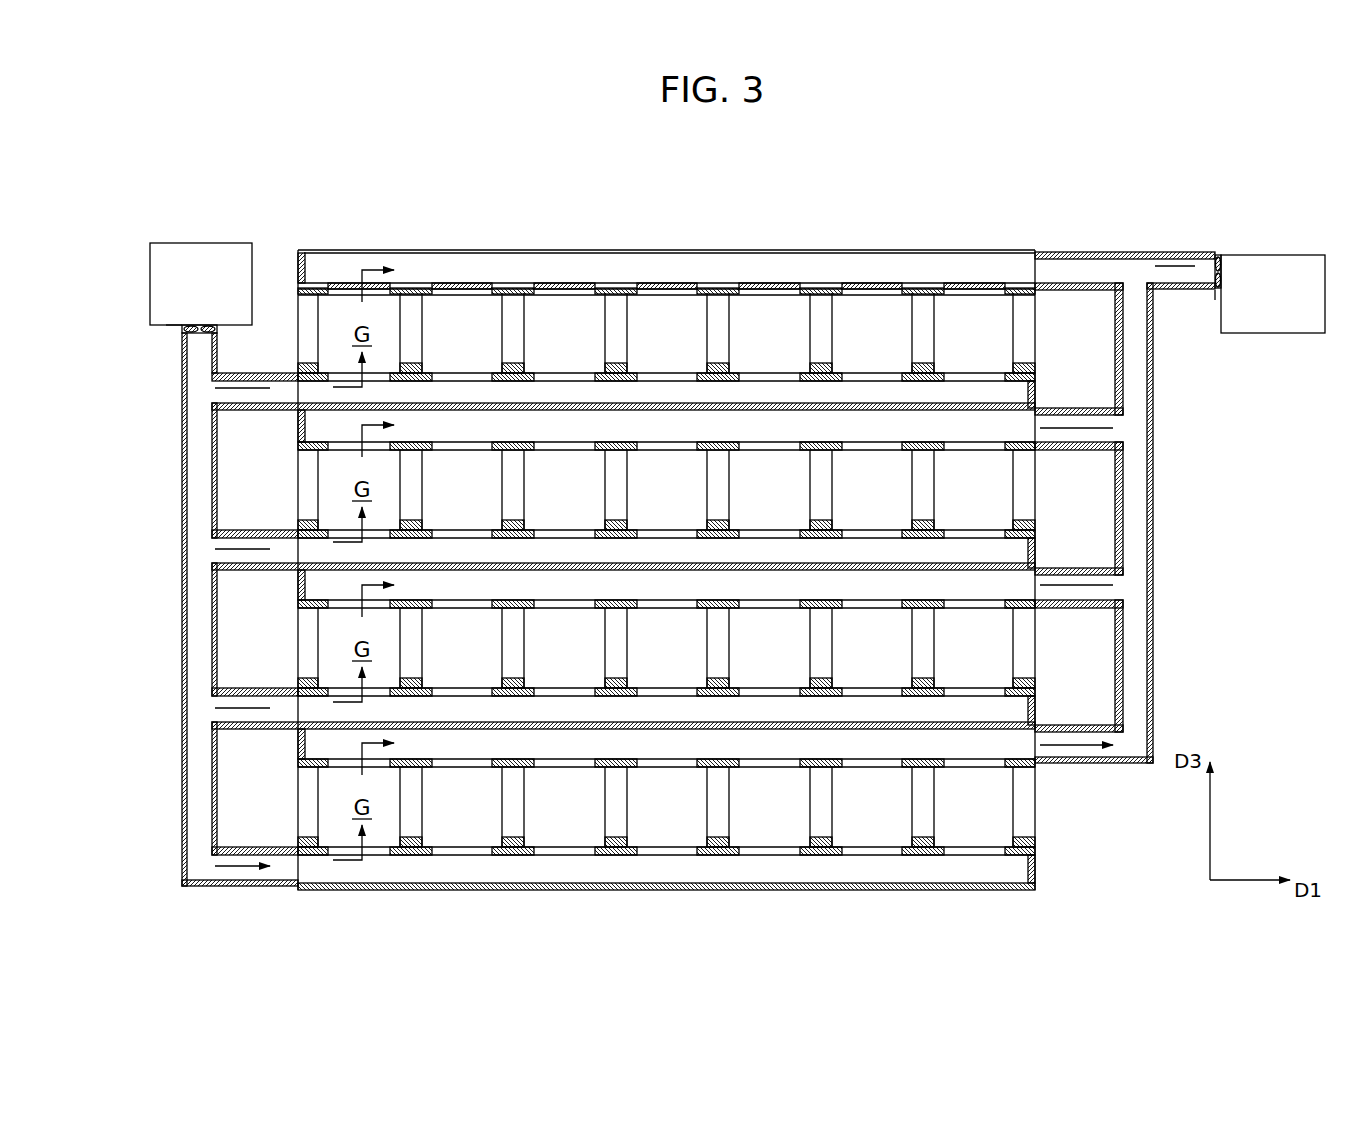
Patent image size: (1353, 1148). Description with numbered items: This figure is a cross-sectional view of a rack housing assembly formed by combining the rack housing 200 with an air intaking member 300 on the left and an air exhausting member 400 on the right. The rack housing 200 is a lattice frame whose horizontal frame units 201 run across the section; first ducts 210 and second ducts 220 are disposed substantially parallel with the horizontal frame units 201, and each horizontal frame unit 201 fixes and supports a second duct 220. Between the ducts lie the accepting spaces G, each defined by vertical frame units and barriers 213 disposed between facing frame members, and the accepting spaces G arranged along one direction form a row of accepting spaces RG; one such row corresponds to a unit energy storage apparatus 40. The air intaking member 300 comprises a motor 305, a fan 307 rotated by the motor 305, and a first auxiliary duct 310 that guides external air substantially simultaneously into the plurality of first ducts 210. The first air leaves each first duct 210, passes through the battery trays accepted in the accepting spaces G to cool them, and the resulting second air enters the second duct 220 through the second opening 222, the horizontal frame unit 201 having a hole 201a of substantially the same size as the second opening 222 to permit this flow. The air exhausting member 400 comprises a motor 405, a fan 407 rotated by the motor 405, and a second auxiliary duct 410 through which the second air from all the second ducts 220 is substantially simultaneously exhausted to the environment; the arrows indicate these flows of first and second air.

The unit energy storage apparatus 40 is at (1078, 190).
The rack housing 200 is at (601, 246).
The horizontal frame unit 201 is at (302, 296).
The hole 201a is at (346, 283).
The first duct 210 is at (1017, 392).
The barrier 213 is at (303, 526).
The second duct 220 is at (1032, 443).
The second opening 222 is at (380, 283).
The air intaking member 300 is at (180, 564).
The motor 305 is at (150, 347).
The fan 307 is at (205, 333).
The first auxiliary duct 310 is at (182, 433).
The air exhausting member 400 is at (1180, 507).
The motor 405 is at (1218, 290).
The fan 407 is at (1220, 300).
The second auxiliary duct 410 is at (1153, 430).
The row of accepting spaces RG is at (1043, 323).
The accepting space G is at (363, 565).